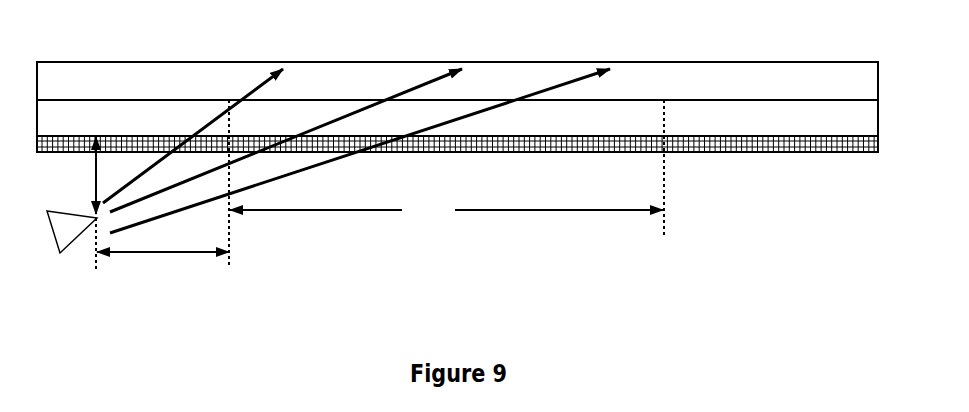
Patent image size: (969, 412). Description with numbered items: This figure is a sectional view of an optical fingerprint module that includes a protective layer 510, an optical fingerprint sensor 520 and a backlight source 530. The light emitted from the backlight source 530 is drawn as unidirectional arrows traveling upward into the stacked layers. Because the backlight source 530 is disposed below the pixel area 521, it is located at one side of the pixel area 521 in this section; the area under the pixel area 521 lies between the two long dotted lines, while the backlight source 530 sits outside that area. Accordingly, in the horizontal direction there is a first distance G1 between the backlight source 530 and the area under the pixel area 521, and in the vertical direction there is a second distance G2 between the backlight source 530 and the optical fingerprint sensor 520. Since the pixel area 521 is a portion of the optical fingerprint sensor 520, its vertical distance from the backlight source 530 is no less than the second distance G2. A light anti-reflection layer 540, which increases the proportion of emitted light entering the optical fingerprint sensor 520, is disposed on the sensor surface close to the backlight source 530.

The protective layer 510 is at (733, 80).
The optical fingerprint sensor 520 is at (733, 122).
The pixel area 521 is at (446, 210).
The backlight source 530 is at (63, 237).
The light anti-reflection layer 540 is at (678, 143).
The first distance G1 is at (163, 266).
The second distance G2 is at (75, 175).